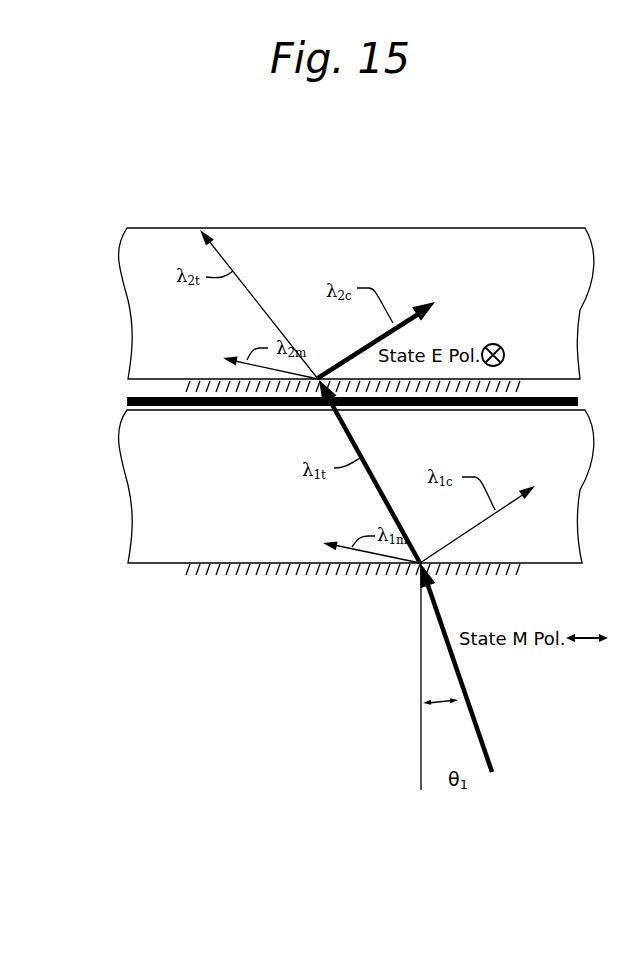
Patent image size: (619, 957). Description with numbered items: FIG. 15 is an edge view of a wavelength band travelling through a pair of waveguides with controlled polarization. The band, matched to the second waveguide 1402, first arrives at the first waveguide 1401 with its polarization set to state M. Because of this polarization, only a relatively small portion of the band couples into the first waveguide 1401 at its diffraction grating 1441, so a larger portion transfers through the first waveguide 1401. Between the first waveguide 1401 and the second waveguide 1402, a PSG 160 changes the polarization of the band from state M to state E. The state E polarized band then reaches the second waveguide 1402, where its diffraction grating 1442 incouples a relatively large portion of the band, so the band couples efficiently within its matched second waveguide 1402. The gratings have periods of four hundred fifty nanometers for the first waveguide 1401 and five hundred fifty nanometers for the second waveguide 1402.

The second waveguide 1402 is at (356, 303).
The first waveguide 1401 is at (356, 486).
The diffraction grating of the second waveguide 1442 is at (180, 384).
The diffraction grating of the first waveguide 1441 is at (180, 568).
The PSG 160 is at (127, 408).